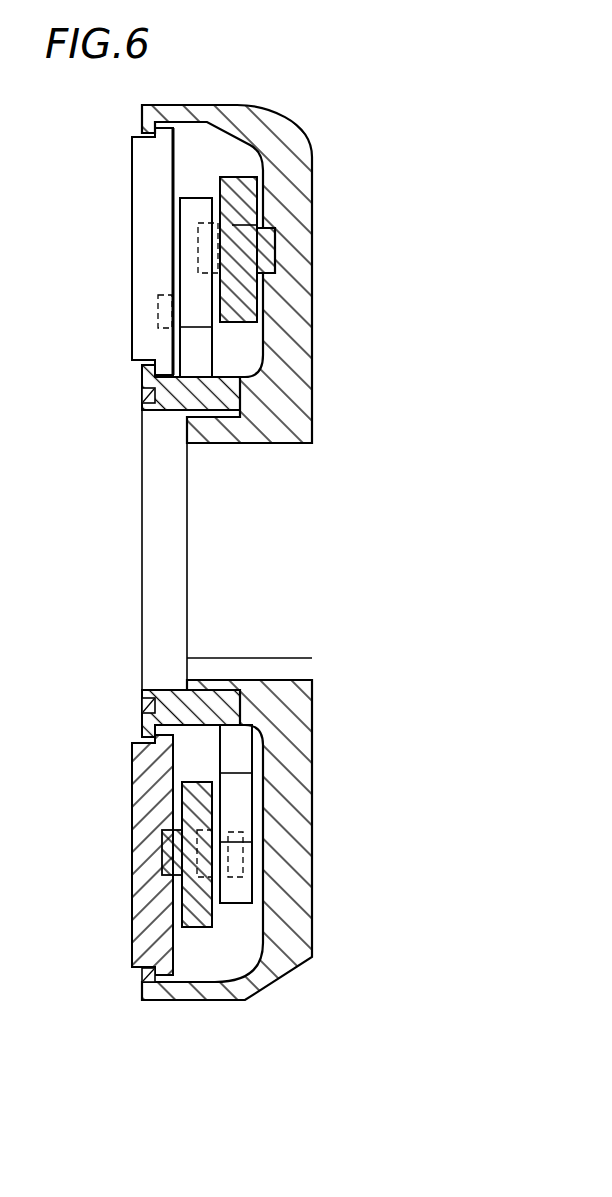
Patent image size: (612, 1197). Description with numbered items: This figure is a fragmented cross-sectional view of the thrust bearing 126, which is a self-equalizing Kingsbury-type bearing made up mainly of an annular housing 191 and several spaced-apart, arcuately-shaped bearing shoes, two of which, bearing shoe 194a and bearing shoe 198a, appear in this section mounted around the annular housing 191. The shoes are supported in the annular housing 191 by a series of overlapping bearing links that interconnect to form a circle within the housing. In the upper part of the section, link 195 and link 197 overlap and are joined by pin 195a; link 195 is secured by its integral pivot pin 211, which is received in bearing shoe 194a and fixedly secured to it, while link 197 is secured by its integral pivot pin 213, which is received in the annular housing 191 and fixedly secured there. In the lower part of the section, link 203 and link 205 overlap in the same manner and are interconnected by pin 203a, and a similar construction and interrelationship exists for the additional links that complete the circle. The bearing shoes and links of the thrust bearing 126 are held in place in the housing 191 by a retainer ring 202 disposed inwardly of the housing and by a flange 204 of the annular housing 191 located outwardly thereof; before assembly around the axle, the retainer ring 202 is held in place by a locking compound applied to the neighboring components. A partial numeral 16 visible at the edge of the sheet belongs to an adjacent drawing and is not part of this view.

The thrust bearing 126 is at (272, 82).
The annular housing 191 is at (300, 146).
The bearing shoe 194a is at (142, 192).
The bearing link 195 is at (190, 211).
The pin 195a is at (198, 247).
The integral pivot pin 211 is at (160, 327).
The bearing link 197 is at (246, 190).
The integral pivot pin 213 is at (262, 252).
The retainer ring 202 is at (150, 725).
The bearing shoe 198a is at (150, 785).
The bearing link 205 is at (192, 906).
The flange 204 is at (158, 987).
The bearing link 203 is at (246, 898).
The pin 203a is at (243, 868).
The adjacent figure numeral 16 is at (604, 275).